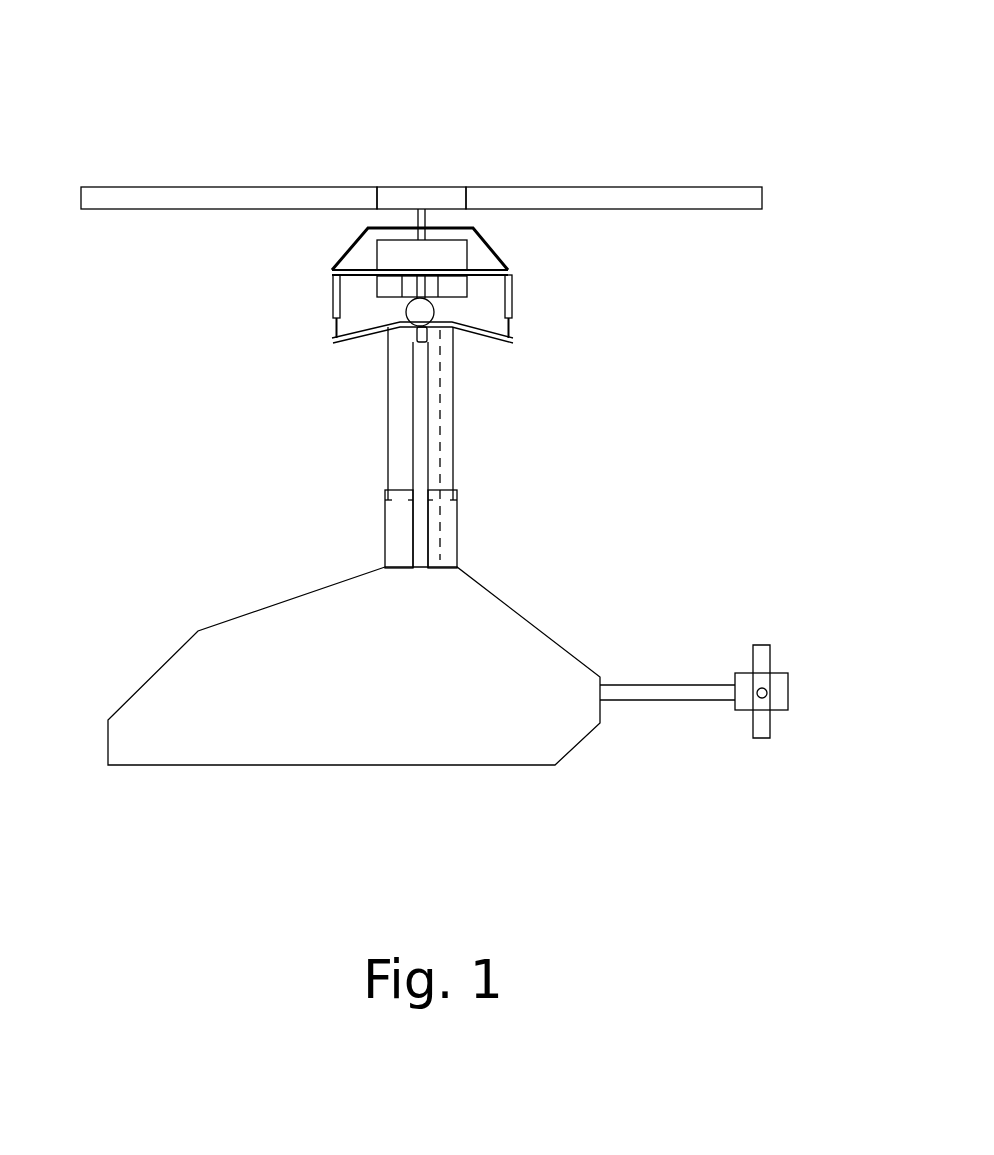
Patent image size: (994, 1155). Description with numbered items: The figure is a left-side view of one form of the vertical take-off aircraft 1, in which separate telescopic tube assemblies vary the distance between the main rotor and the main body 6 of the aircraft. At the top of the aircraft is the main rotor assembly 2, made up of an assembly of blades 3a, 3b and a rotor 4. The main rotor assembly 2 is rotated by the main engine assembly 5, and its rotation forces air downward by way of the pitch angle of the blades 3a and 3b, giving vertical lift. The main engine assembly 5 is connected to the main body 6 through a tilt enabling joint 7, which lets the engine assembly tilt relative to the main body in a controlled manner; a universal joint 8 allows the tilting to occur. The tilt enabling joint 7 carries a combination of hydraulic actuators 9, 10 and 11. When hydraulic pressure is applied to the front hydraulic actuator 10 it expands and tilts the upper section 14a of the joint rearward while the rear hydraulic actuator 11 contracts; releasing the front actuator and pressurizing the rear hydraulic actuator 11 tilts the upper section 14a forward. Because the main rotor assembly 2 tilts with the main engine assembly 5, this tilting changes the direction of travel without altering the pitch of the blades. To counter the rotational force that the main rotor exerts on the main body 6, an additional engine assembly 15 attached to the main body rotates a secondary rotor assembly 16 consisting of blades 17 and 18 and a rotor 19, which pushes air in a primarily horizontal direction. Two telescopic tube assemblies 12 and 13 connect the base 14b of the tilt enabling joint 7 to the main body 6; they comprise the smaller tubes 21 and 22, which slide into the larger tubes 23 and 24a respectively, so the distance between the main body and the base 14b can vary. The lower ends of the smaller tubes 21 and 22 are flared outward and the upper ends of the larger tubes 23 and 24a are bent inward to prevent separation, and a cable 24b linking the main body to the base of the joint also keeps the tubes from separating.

The vertical take-off aircraft 1 is at (295, 815).
The main rotor assembly 2 is at (443, 130).
The blade 3a is at (253, 197).
The blade 3b is at (582, 197).
The rotor 4 is at (420, 215).
The main engine assembly 5 is at (393, 253).
The main body 6 is at (447, 723).
The tilt enabling joint 7 is at (648, 306).
The universal joint 8 is at (408, 314).
The hydraulic actuator 9 is at (333, 343).
The front hydraulic actuator 10 is at (335, 288).
The rear hydraulic actuator 11 is at (510, 320).
The telescopic tube assembly 12 is at (300, 493).
The telescopic tube assembly 13 is at (528, 461).
The upper section 14a is at (503, 265).
The base 14b is at (512, 340).
The additional engine assembly 15 is at (782, 687).
The secondary rotor assembly 16 is at (747, 750).
The blade 17 is at (758, 660).
The blade 18 is at (765, 737).
The rotor 19 is at (758, 698).
The smaller tube 21 is at (398, 408).
The smaller tube 22 is at (450, 409).
The larger tube 23 is at (397, 533).
The larger tube 24a is at (457, 541).
The cable 24b is at (440, 505).